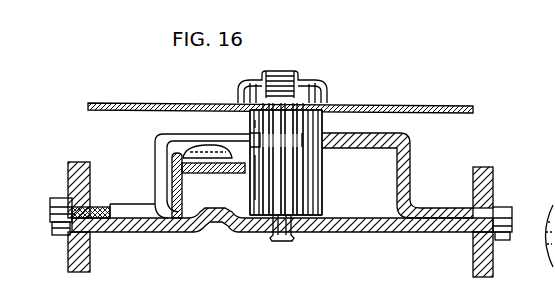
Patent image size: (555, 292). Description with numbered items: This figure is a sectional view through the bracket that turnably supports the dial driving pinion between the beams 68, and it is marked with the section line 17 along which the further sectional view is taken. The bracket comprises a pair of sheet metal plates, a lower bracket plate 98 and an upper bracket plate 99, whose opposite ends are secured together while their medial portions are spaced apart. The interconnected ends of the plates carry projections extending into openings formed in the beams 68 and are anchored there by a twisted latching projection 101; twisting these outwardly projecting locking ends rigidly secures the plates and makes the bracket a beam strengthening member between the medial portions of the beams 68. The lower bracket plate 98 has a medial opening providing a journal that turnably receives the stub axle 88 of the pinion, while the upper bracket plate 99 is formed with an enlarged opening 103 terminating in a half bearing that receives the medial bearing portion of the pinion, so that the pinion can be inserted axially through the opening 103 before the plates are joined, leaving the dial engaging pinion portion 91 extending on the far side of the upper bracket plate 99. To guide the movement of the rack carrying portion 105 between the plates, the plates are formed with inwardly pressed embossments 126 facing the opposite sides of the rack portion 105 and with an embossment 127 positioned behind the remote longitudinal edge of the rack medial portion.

The section line 17- 17 is at (55, 128).
The beams 68 is at (72, 183).
The stub axle 88 is at (280, 240).
The dial engaging pinion portion 91 is at (320, 120).
The lower bracket plate 98 is at (383, 233).
The upper bracket plate 99 is at (378, 135).
The twisted latching projection 101 is at (57, 236).
The enlarged opening 103 is at (203, 135).
The rack carrying portion 105 is at (231, 175).
The inwardly pressed embossments 126 is at (208, 158).
The embossment 127 is at (173, 182).